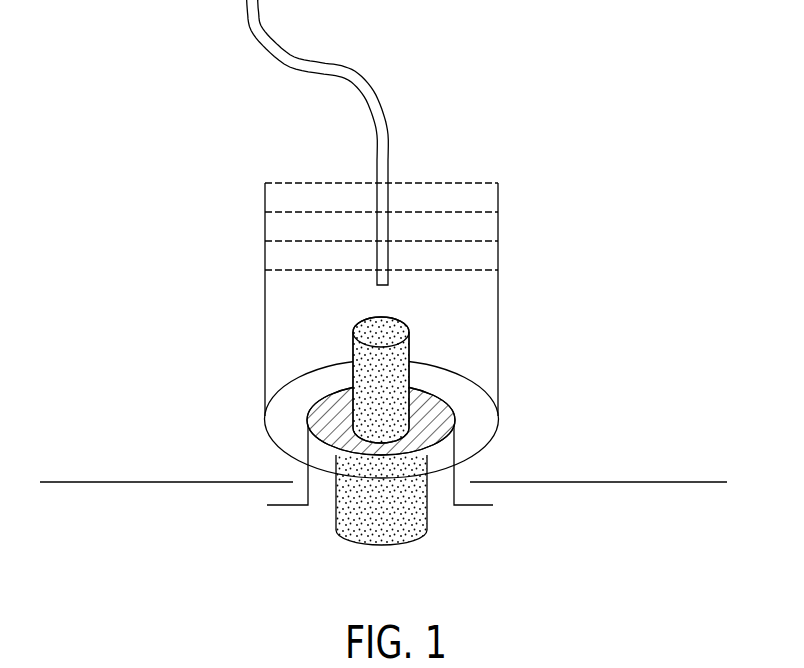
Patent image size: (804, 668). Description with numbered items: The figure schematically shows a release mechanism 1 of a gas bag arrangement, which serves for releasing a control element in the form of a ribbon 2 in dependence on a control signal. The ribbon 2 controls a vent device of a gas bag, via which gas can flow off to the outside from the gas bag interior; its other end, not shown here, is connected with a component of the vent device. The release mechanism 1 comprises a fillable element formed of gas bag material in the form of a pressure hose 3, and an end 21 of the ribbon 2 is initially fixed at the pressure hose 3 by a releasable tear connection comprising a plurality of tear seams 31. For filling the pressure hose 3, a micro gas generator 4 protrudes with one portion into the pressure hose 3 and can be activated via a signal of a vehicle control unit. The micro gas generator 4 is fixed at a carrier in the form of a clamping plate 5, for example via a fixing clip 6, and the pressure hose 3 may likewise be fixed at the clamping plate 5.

The release mechanism 1 is at (622, 245).
The ribbon 2 is at (346, 68).
The end of the ribbon 21 is at (388, 228).
The pressure hose 3 is at (500, 340).
The tear seams 31 is at (450, 210).
The micro gas generator 4 is at (420, 533).
The clamping plate 5 is at (617, 480).
The fixing clip 6 is at (477, 507).